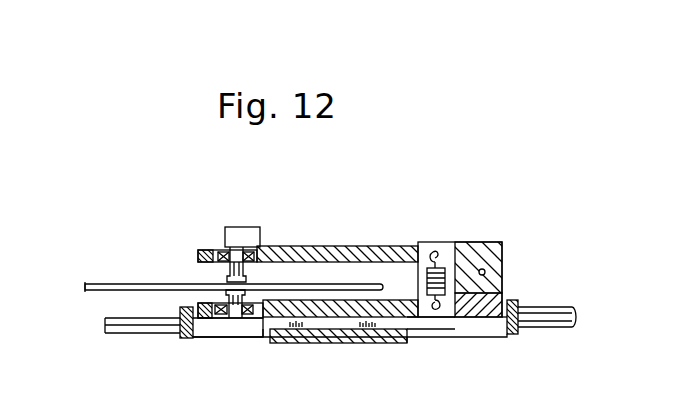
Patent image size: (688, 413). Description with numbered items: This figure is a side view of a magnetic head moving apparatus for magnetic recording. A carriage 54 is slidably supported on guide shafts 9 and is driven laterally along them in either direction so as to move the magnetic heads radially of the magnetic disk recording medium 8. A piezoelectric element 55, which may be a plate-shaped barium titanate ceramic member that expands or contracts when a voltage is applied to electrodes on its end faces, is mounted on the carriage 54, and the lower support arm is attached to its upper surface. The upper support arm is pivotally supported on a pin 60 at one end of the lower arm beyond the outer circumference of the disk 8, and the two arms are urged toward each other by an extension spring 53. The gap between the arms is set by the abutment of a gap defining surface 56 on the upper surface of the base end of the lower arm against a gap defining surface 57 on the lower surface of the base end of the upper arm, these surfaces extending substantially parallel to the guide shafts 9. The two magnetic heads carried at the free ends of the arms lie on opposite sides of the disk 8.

The magnetic disk recording medium 8 is at (105, 283).
The guide shafts 9 is at (550, 328).
The extension spring 53 is at (448, 246).
The carriage 54 is at (492, 337).
The piezoelectric element 55 is at (337, 330).
The gap defining surface 56 is at (493, 298).
The gap defining surface 57 is at (490, 270).
The pin 60 is at (482, 269).